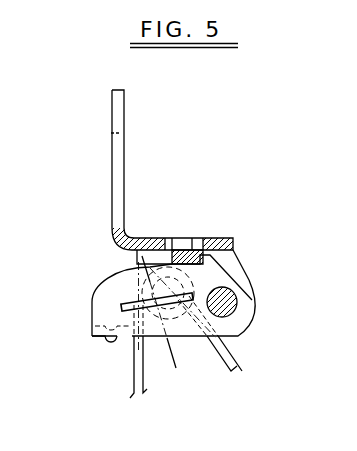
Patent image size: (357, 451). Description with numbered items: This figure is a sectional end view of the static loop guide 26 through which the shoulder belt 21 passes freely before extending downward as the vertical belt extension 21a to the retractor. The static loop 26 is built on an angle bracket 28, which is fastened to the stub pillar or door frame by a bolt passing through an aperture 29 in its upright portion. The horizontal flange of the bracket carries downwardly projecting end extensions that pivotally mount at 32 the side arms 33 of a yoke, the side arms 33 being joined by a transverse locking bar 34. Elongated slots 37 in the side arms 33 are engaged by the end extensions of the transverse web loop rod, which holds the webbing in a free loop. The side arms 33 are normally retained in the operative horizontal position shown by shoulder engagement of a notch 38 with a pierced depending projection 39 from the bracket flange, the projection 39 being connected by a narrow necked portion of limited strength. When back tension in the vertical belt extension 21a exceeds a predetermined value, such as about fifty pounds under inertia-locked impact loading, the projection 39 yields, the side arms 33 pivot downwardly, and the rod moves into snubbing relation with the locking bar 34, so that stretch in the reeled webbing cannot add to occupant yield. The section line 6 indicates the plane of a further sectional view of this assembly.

The angle bracket 28 is at (122, 113).
The aperture 29 is at (126, 190).
The static loop guide 26 is at (207, 194).
The notch 38 is at (192, 238).
The pierced depending projection 39 is at (188, 238).
The section line 6- 6 is at (141, 263).
The elongated slots 37 is at (108, 288).
The pivot 32 is at (237, 302).
The transverse locking bar 34 is at (100, 341).
The side arms 33 is at (188, 344).
The vertical belt extension 21a is at (131, 388).
The shoulder belt 21 is at (240, 366).